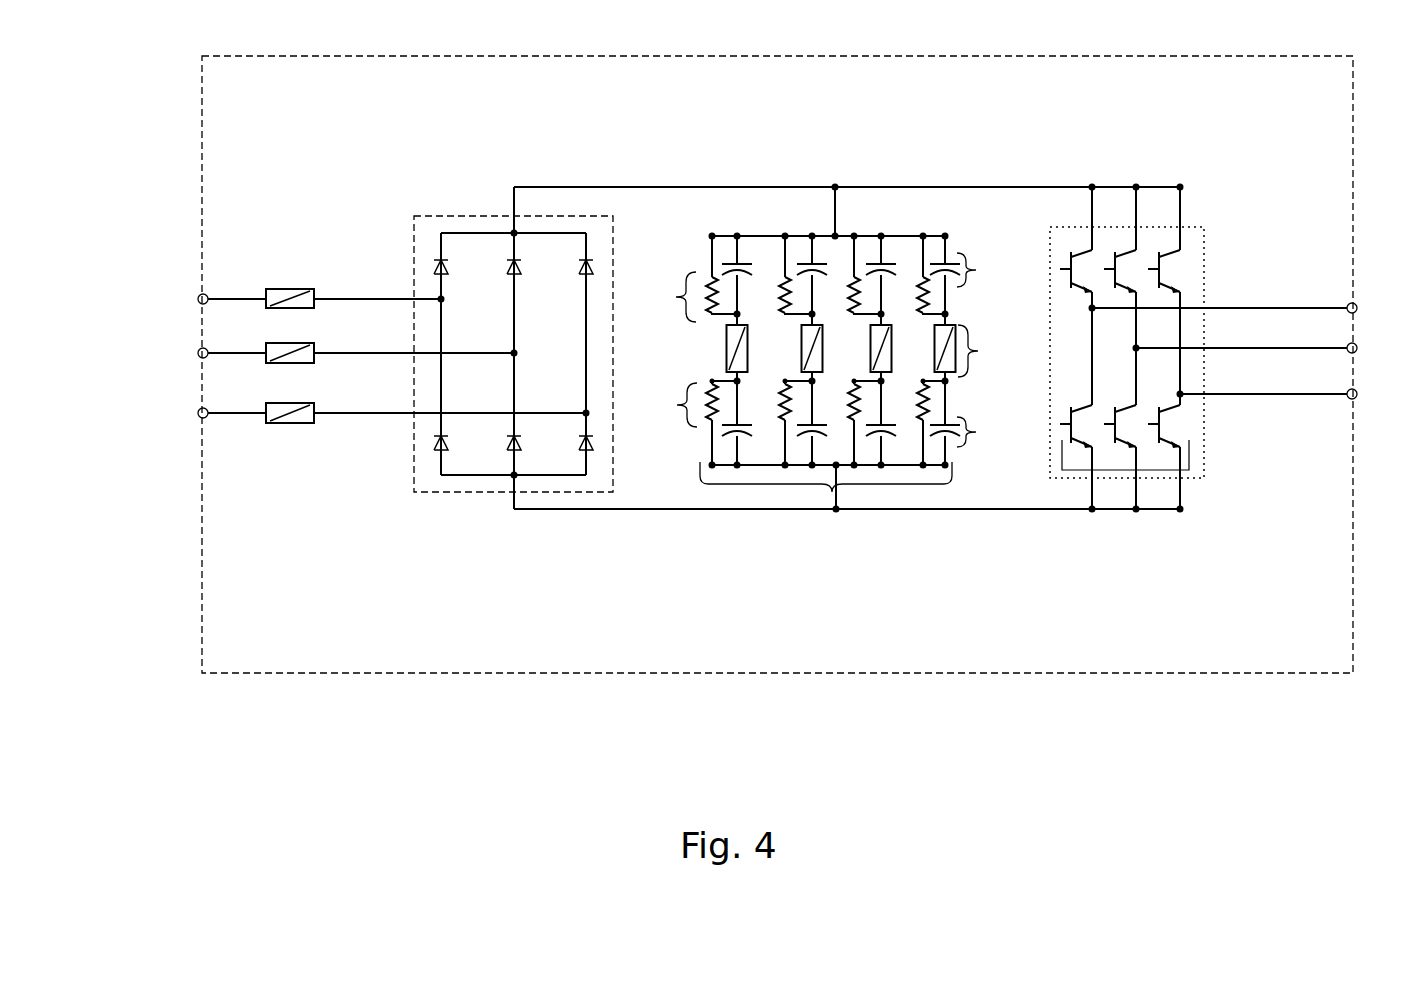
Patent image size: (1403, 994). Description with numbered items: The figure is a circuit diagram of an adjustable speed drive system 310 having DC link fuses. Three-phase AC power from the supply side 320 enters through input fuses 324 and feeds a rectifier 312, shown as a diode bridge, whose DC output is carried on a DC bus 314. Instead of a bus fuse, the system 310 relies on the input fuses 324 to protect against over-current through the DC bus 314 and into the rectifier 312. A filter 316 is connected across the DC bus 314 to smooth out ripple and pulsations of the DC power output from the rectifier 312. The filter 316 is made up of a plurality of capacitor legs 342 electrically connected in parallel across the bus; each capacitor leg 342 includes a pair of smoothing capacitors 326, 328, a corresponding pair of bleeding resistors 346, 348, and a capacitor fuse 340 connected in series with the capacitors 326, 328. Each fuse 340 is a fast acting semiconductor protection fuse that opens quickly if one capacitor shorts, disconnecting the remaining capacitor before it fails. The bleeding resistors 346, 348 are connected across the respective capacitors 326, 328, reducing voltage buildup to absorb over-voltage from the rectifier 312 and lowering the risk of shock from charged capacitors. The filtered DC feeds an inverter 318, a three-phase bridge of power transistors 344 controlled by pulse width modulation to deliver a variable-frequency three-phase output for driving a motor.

The adjustable speed drive system 310 is at (1292, 151).
The rectifier 312 is at (462, 216).
The DC bus 314 is at (888, 187).
The filter 316 is at (742, 210).
The inverter 318 is at (1218, 398).
The AC input power source 320 is at (133, 352).
The input fuses 324 is at (268, 405).
The smoothing capacitor 326 is at (977, 269).
The smoothing capacitor 328 is at (977, 432).
The capacitor fuse 340 is at (979, 351).
The capacitor leg 342 is at (830, 491).
The power transistor 344 is at (1155, 471).
The bleeding resistor 346 is at (674, 297).
The bleeding resistor 348 is at (675, 405).